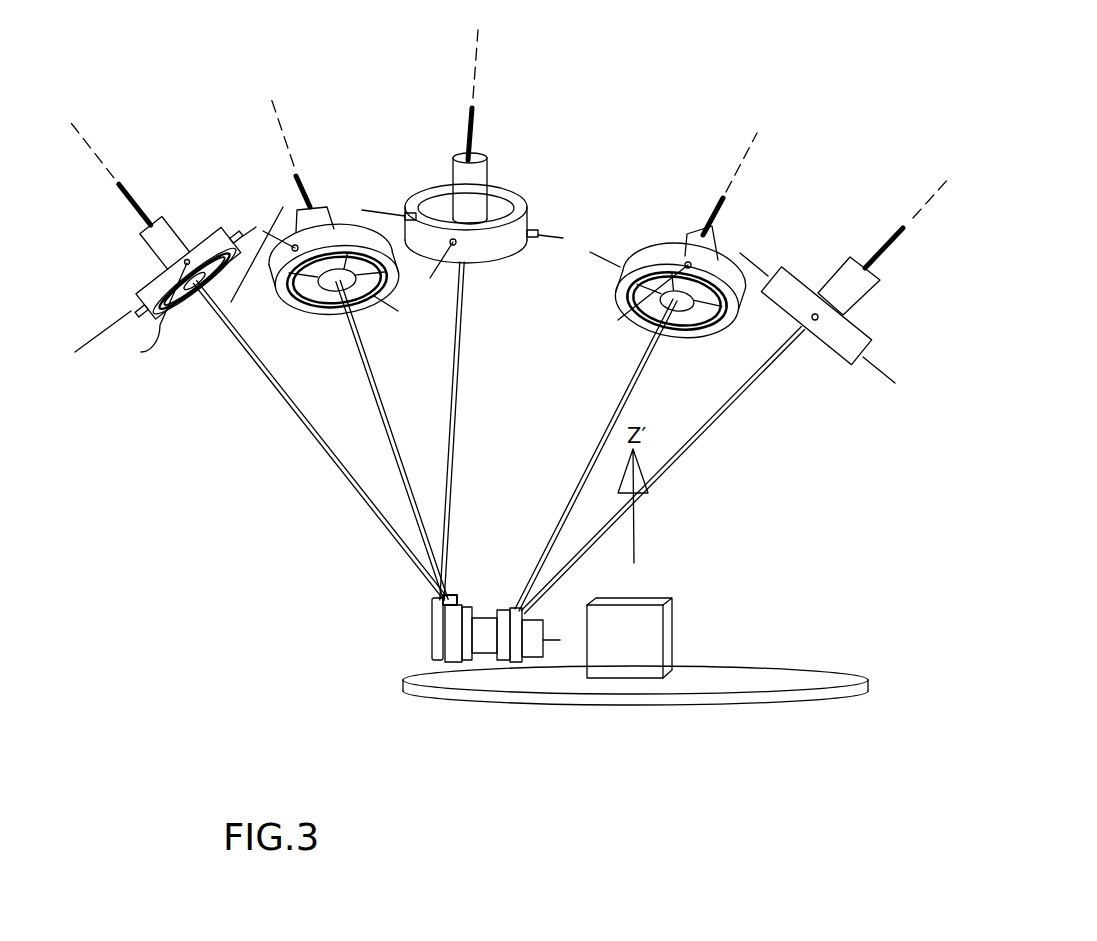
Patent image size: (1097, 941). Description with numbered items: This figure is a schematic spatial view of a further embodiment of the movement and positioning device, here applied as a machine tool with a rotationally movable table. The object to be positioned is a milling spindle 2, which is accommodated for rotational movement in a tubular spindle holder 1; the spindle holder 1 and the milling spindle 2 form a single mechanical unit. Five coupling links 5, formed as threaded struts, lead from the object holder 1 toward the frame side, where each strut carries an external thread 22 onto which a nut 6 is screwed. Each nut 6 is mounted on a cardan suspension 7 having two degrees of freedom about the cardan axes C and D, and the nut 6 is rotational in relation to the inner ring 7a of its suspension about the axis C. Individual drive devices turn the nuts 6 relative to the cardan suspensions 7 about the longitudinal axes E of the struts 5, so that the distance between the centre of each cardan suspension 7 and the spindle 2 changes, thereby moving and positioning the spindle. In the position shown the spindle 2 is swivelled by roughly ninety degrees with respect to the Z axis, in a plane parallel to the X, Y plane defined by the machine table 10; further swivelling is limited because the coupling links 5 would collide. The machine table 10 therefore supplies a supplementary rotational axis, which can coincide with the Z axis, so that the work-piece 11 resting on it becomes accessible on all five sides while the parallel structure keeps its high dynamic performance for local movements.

The spindle holder 1 is at (483, 625).
The milling spindle 2 is at (553, 644).
The coupling links 5 is at (276, 391).
The nut 6 is at (152, 239).
The cardan suspension 7 is at (176, 211).
The inner ring 7a is at (203, 247).
The machine table 10 is at (805, 675).
The work-piece 11 is at (650, 612).
The external thread 22 is at (133, 210).
The cardan axis C is at (906, 361).
The cardan axis D is at (107, 332).
The longitudinal axis E is at (85, 148).